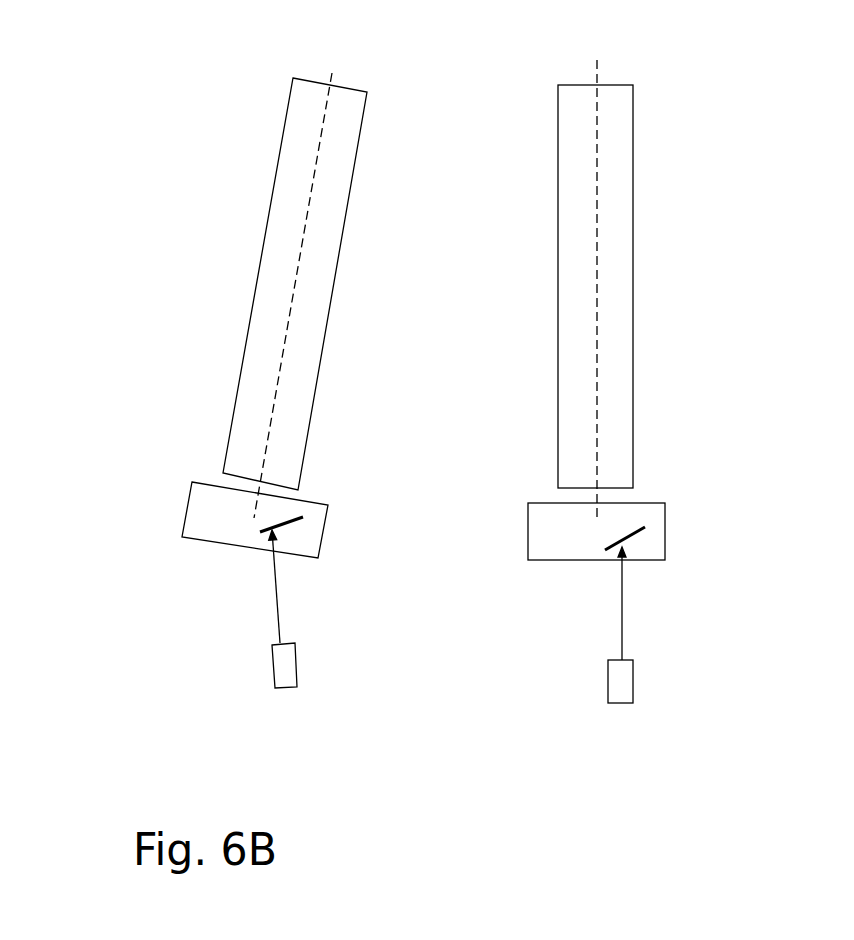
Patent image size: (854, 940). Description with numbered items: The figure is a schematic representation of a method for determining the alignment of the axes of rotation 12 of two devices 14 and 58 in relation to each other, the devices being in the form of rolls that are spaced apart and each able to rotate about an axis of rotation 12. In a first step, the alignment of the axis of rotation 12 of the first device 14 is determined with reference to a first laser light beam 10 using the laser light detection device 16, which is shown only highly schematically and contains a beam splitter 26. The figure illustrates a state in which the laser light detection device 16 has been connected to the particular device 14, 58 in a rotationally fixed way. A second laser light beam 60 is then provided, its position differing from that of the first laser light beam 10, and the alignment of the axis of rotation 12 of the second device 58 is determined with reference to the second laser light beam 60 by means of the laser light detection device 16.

The first laser light beam 10 is at (622, 632).
The axis of rotation 12 is at (332, 75).
The first device 14 is at (628, 243).
The laser light detection device 16 is at (175, 552).
The beam splitter 26 is at (298, 520).
The second device 58 is at (268, 255).
The second laser light beam 60 is at (277, 612).